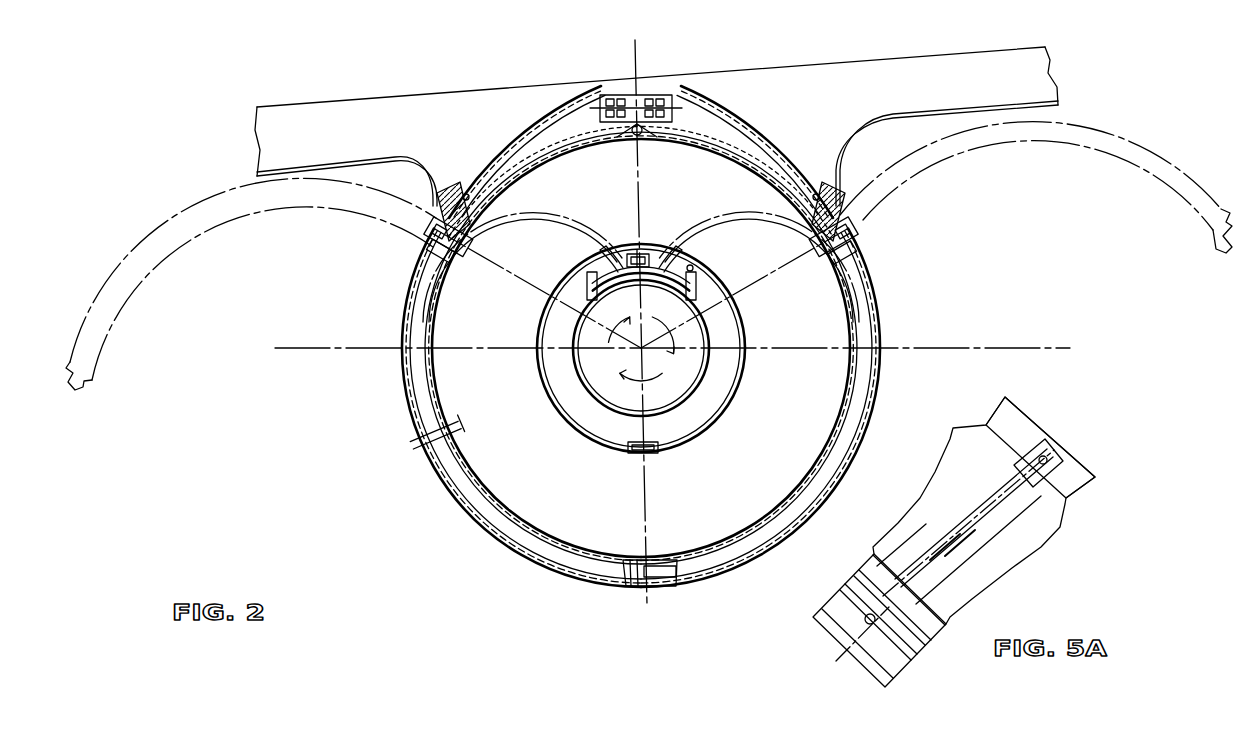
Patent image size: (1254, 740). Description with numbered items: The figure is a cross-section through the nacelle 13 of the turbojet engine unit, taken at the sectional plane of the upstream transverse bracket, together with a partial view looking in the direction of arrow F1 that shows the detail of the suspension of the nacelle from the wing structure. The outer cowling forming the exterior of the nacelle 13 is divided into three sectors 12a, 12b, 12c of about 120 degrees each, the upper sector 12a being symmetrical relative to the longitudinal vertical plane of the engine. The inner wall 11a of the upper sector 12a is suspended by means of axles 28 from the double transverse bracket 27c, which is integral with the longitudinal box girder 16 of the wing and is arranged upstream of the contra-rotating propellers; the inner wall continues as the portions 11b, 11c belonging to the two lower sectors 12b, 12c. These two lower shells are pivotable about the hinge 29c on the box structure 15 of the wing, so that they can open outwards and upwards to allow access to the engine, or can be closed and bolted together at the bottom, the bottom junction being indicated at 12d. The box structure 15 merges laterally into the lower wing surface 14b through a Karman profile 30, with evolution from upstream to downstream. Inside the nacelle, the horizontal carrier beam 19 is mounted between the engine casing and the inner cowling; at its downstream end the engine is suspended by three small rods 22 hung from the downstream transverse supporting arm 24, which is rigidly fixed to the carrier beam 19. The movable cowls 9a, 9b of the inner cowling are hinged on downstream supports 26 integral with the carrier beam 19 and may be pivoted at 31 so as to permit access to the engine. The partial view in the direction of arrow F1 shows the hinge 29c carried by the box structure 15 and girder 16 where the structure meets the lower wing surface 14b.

In FIG. 2, the movable cowl of the inner cowling 9a is at (713, 224).
In FIG. 2, the movable cowl of the inner cowling 9b is at (560, 219).
In FIG. 2, the inner wall of the upper sector 11a is at (708, 144).
In FIG. 2, the inner shell segment 11b is at (488, 491).
In FIG. 2, the inner shell segment 11c is at (823, 453).
In FIG. 2, the upper sector of the outer cowling 12a is at (768, 172).
In FIG. 2, the lower sector of the outer cowling 12b is at (515, 530).
In FIG. 2, the lower sector of the outer cowling 12c is at (758, 537).
In FIG. 2, the ring closure piece 12d is at (640, 588).
In FIG. 2, the nacelle 13 is at (649, 375).
In FIG. 2, the lower wing surface 14b is at (347, 163).
In FIG. 2, the box structure 15 is at (510, 182).
In FIG. 5A, the box structure 15 is at (1000, 480).
In FIG. 2, the longitudinal box girder 16 is at (638, 95).
In FIG. 5A, the longitudinal box girder 16 is at (1060, 470).
In FIG. 2, the horizontal carrier beam 19 is at (636, 250).
In FIG. 2, the small rods 22 is at (692, 278).
In FIG. 2, the downstream transverse supporting arm 24 is at (588, 263).
In FIG. 2, the downstream supports 26 is at (609, 257).
In FIG. 2, the double transverse bracket 27c is at (552, 126).
In FIG. 2, the axles 28 is at (466, 198).
In FIG. 2, the hinge 29c is at (420, 238).
In FIG. 5A, the hinge 29c is at (863, 622).
In FIG. 2, the Karman profile 30 is at (436, 197).
In FIG. 2, the pivot of the inner cowling sectors 31 is at (692, 265).
In FIG. 2, the angular spacing 120 is at (741, 410).
In FIG. 2, the arrow F1 is at (455, 158).